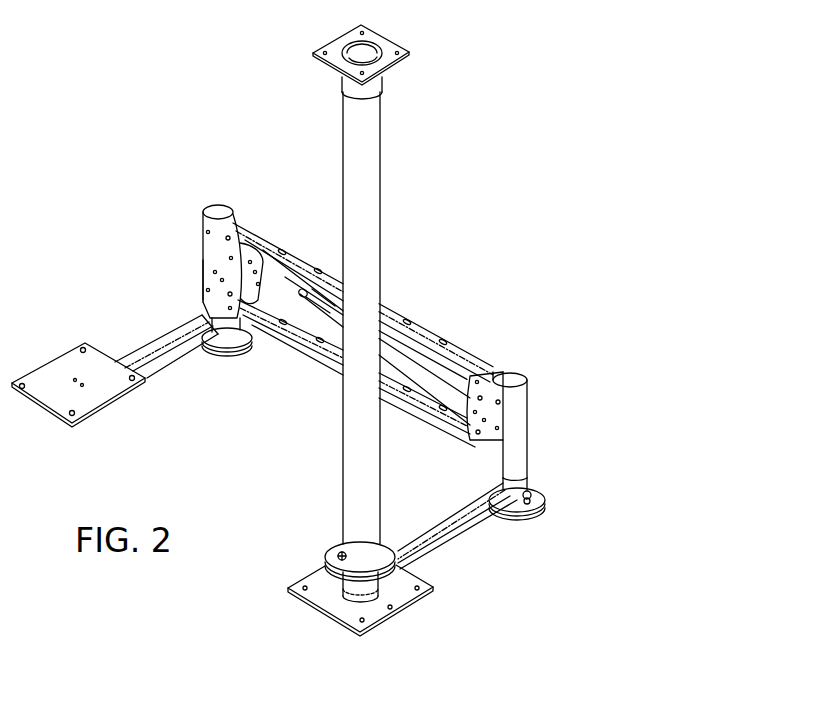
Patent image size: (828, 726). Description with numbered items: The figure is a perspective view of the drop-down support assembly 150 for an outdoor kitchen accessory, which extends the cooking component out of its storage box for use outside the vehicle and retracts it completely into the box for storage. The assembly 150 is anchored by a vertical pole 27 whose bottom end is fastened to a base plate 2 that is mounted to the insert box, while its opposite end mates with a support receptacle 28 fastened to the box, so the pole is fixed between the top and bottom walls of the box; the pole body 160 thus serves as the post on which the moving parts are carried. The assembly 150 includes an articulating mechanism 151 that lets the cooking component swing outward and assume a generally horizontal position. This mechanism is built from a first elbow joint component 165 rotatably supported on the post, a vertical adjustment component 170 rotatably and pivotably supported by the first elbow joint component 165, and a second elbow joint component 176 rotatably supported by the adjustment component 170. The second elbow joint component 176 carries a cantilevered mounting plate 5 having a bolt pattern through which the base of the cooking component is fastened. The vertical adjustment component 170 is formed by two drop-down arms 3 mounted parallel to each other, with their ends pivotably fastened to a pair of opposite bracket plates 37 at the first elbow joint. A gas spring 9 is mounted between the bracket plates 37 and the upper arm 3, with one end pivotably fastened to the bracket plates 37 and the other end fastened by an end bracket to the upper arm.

The base plate 2 is at (315, 612).
The drop-down arms 3 is at (300, 343).
The cantilevered mounting plate 5 is at (107, 403).
The gas spring 9 is at (433, 382).
The vertical pole 27 is at (342, 435).
The support receptacle 28 is at (410, 52).
The bracket plates 37 is at (493, 427).
The drop-down support assembly 150 is at (203, 194).
The articulating mechanism 151 is at (180, 262).
The pole 160 is at (390, 172).
The first elbow joint component 165 is at (461, 543).
The vertical adjustment component 170 is at (414, 305).
The second elbow joint component 176 is at (169, 362).